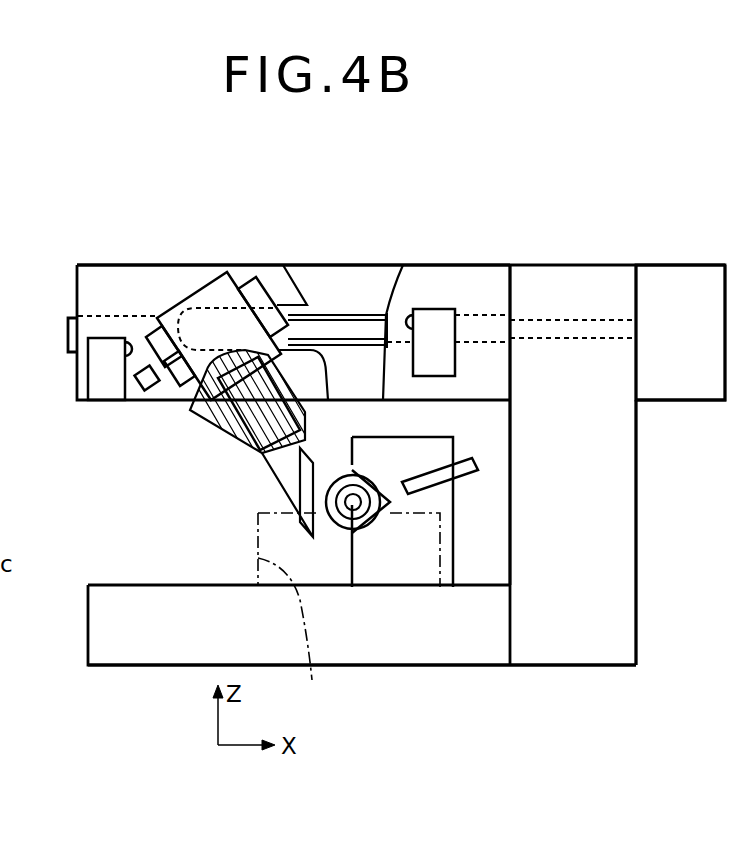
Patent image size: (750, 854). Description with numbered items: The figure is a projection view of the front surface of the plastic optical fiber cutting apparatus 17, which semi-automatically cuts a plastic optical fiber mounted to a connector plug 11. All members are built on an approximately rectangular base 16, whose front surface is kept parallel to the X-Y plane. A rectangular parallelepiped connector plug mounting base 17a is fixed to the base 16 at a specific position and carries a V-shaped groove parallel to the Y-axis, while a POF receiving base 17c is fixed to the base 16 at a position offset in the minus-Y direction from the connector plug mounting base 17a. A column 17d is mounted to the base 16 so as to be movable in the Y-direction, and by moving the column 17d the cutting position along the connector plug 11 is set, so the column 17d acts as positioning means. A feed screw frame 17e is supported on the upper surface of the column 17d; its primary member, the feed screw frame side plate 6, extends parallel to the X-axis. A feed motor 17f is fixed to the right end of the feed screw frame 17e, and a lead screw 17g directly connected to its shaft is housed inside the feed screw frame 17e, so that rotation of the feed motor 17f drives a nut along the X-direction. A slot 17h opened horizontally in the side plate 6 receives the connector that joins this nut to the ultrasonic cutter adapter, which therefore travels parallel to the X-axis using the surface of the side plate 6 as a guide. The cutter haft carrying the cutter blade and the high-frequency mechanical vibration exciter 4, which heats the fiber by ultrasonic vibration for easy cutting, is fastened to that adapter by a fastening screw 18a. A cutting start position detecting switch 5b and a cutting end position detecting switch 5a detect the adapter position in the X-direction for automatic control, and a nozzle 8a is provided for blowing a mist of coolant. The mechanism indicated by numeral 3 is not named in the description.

The carriage 3 is at (197, 250).
The high-frequency mechanical vibration exciter 4 is at (218, 412).
The cutting end position detecting switch 5a is at (430, 308).
The cutting start position detecting switch 5b is at (88, 378).
The feed screw frame side plate 6 is at (108, 265).
The nozzle 8a is at (480, 472).
The connector plug 11 is at (340, 528).
The base 16 is at (418, 665).
The plastic optical fiber cutting apparatus 17 is at (575, 683).
The connector plug mounting base 17a is at (457, 562).
The POF receiving base 17c is at (349, 614).
The column 17d is at (636, 466).
The feed screw frame 17e is at (483, 265).
The feed motor 17f is at (682, 265).
The lead screw 17g is at (343, 315).
The slot 17h is at (297, 313).
The fastening screw 18a is at (140, 385).